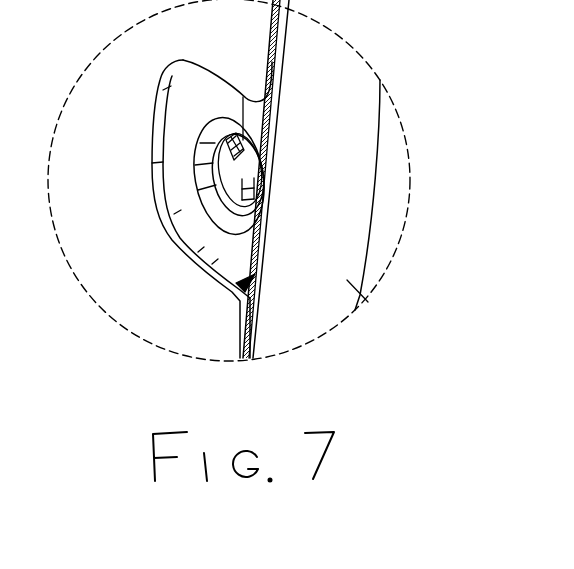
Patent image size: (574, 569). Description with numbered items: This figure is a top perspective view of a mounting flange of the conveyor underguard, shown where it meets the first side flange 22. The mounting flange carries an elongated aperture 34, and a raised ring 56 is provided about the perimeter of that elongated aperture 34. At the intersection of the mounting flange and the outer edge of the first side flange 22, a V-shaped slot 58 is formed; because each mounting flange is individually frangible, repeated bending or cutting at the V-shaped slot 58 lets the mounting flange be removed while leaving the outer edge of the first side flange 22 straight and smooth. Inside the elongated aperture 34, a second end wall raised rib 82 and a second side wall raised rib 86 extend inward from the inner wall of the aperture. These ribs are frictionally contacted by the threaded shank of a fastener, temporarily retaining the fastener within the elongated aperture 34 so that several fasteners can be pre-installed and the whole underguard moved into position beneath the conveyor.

The first side flange 22 is at (367, 293).
The elongated aperture 34 is at (272, 143).
The raised ring 56 is at (210, 192).
The V-shaped slot 58 is at (245, 280).
The second end wall raised rib 82 is at (232, 93).
The second side wall raised rib 86 is at (242, 190).